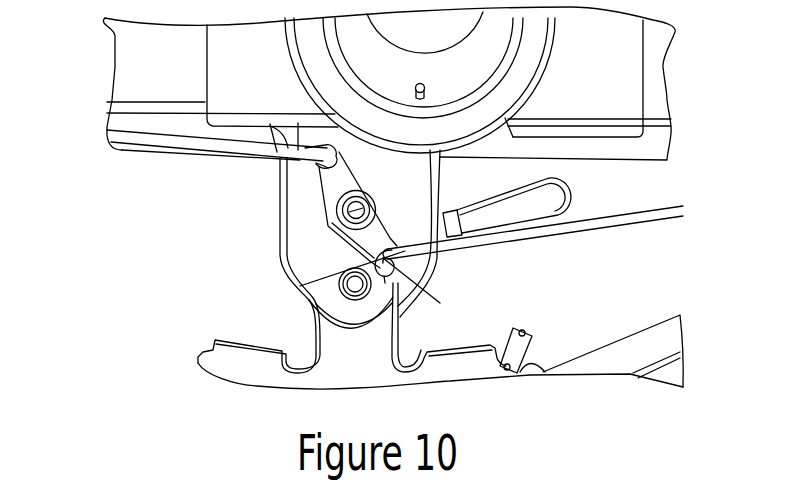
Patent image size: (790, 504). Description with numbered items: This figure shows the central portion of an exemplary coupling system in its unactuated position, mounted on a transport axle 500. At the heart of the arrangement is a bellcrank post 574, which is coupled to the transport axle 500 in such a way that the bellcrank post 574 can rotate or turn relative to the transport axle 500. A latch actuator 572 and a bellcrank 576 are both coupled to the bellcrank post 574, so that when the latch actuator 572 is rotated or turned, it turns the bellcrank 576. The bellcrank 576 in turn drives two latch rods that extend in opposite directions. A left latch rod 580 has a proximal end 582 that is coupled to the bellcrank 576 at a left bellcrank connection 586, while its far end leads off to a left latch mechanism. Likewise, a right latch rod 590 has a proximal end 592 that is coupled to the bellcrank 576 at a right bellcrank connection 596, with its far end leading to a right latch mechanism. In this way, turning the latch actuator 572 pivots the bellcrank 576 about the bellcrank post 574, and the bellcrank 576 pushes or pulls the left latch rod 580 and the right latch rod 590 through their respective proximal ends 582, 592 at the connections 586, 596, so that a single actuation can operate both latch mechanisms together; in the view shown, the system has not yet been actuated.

The transport axle 500 is at (125, 64).
The left latch rod 580 is at (163, 137).
The proximal end 582 is at (320, 163).
The left bellcrank connection 586 is at (313, 165).
The bellcrank 576 is at (330, 188).
The bellcrank post 574 is at (358, 210).
The right bellcrank connection 596 is at (300, 286).
The proximal end 592 is at (420, 268).
The right latch rod 590 is at (553, 230).
The latch actuator 572 is at (579, 193).